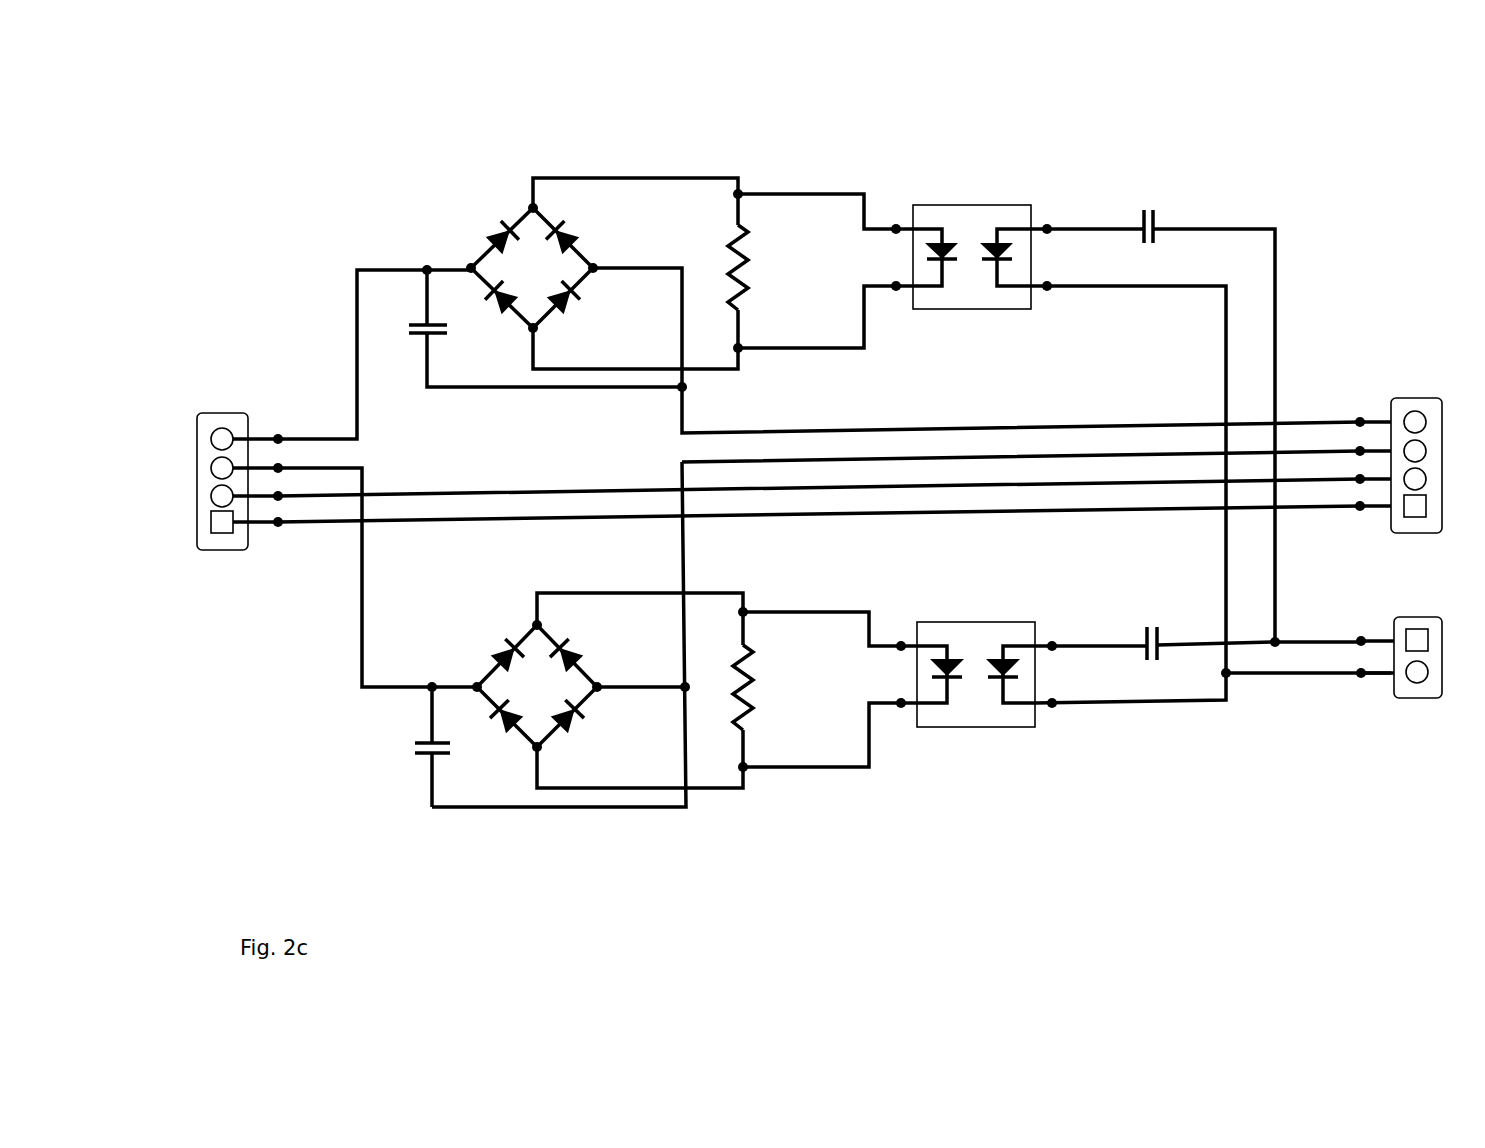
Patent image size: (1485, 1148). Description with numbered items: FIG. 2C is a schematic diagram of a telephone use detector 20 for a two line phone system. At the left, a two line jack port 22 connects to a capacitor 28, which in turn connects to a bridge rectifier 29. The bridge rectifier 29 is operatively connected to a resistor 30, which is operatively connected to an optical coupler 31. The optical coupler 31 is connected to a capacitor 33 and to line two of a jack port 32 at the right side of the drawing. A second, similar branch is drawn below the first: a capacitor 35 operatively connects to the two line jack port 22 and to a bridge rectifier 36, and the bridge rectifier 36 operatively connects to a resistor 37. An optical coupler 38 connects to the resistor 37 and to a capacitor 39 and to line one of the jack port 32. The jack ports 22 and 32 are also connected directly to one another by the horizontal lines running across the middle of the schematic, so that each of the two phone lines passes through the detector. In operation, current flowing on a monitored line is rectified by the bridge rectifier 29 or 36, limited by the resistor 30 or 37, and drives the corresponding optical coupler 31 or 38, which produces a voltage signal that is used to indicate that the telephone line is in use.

The circuit arrangement 20 is at (285, 193).
The two line jack port 22 is at (220, 413).
The capacitor 28 is at (413, 323).
The bridge rectifier 29 is at (520, 218).
The resistor 30 is at (727, 258).
The optical coupler 31 is at (977, 203).
The jack port 32 is at (1418, 403).
The capacitor 33 is at (1163, 212).
The capacitor 35 is at (420, 757).
The bridge rectifier 36 is at (525, 735).
The resistor 37 is at (733, 673).
The optical coupler 38 is at (972, 727).
The capacitor 39 is at (1142, 628).